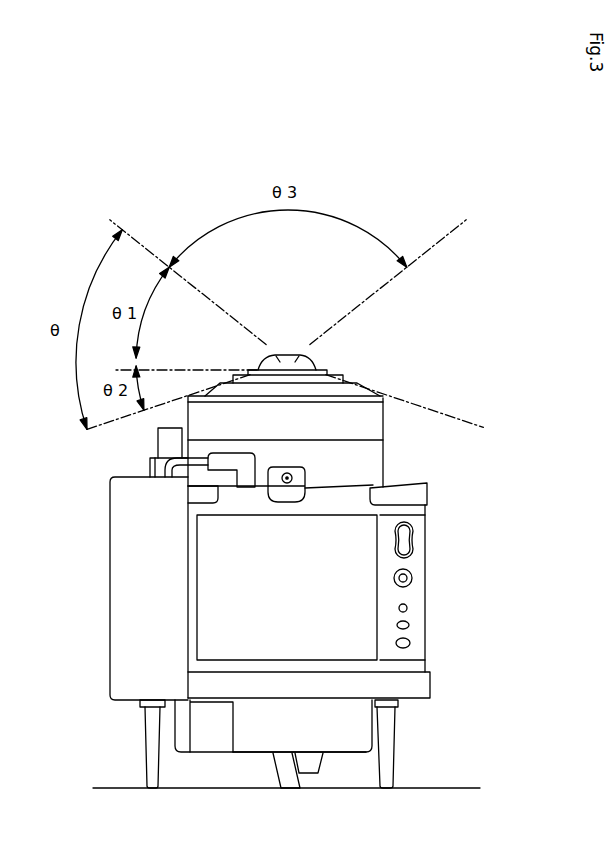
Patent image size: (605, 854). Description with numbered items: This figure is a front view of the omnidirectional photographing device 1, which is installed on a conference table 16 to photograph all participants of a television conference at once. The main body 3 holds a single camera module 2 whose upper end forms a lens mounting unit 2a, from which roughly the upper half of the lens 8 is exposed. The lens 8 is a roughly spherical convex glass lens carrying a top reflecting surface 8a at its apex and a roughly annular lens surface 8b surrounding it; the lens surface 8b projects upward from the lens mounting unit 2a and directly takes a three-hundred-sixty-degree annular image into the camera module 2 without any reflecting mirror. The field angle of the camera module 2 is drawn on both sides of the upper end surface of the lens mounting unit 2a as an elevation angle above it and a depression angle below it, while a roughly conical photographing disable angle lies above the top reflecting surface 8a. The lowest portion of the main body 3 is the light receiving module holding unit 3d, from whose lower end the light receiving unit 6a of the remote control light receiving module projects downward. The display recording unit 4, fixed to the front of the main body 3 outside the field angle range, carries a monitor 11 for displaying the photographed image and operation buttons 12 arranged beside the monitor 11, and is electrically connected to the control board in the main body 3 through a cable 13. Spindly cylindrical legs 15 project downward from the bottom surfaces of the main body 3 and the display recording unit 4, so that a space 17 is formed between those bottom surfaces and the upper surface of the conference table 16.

The omnidirectional photographing device 1 is at (360, 192).
The camera module 2 is at (333, 378).
The lens mounting unit 2a is at (322, 364).
The main body 3 is at (317, 547).
The light receiving module holding unit 3d is at (253, 738).
The display recording unit 4 is at (133, 558).
The light receiving unit 6a is at (303, 768).
The lens 8 is at (267, 298).
The top reflecting surface 8a is at (293, 357).
The lens surface 8b is at (283, 357).
The monitor 11 is at (297, 609).
The operation buttons 12 is at (413, 536).
The cable 13 is at (150, 455).
The legs 15 is at (152, 747).
The conference table 16 is at (384, 826).
The space 17 is at (188, 765).